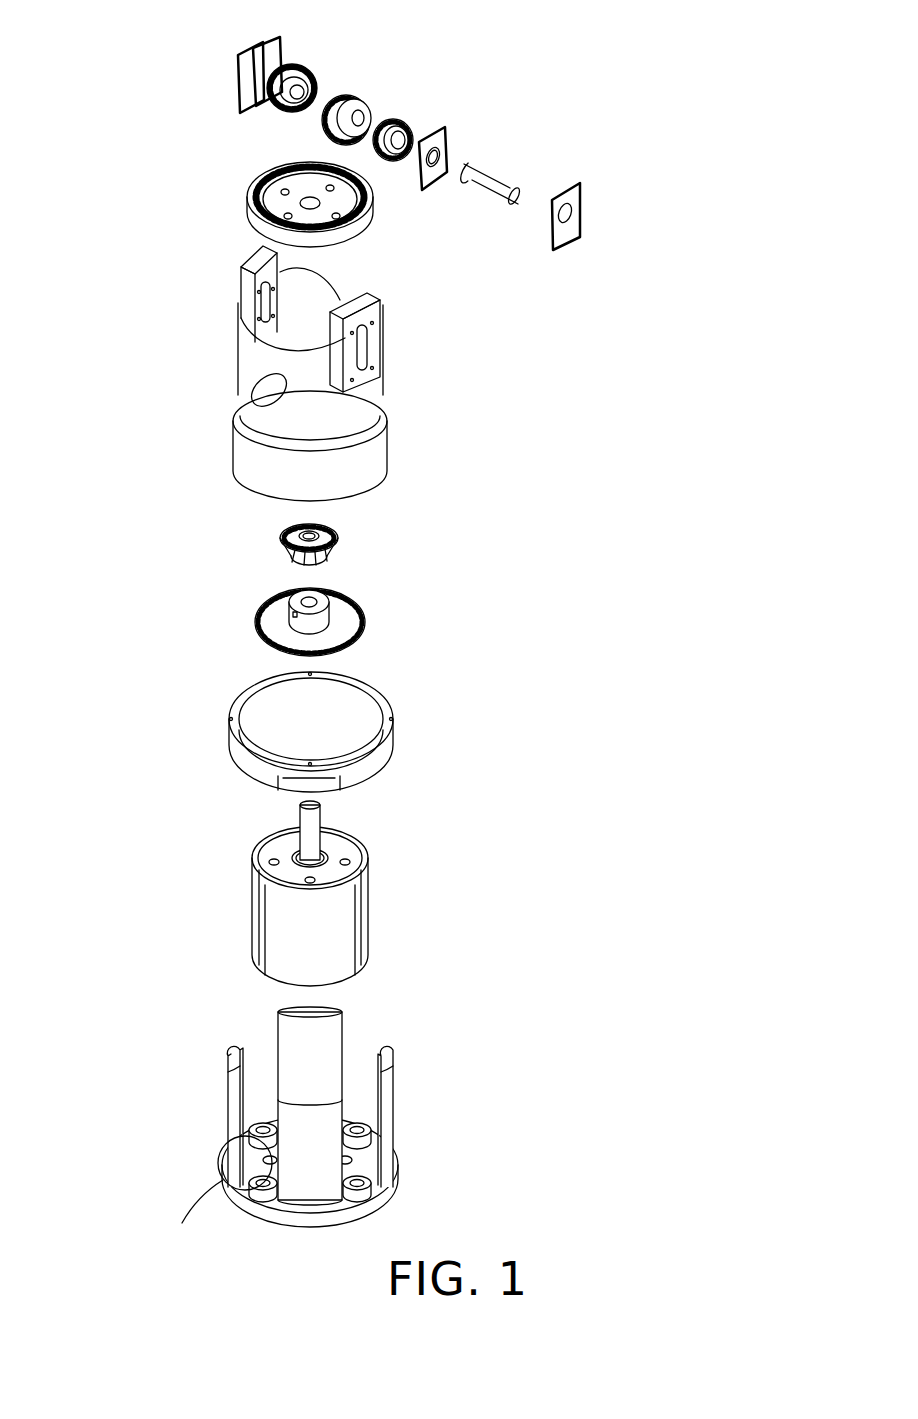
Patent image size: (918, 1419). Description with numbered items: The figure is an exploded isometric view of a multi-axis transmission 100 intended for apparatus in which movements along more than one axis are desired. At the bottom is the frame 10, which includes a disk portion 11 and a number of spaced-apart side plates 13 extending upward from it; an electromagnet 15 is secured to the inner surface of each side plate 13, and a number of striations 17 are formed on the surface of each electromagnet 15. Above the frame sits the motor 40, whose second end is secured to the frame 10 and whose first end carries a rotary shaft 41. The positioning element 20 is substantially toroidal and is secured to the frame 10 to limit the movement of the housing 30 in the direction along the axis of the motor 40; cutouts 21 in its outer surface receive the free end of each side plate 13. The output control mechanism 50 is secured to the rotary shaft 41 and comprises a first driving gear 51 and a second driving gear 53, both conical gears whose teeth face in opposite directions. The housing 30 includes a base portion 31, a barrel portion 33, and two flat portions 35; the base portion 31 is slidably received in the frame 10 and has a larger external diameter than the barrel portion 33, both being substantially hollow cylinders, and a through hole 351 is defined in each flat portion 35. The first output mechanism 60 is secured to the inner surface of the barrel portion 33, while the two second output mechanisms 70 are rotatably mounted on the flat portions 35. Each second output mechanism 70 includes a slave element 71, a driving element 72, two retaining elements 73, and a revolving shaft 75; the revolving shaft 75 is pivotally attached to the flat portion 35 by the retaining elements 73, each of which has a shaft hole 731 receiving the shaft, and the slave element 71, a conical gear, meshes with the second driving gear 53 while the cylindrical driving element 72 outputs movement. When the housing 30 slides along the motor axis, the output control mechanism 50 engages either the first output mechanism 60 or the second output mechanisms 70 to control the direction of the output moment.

The multi-axis transmission 100 is at (140, 70).
The frame 10 is at (348, 1138).
The disk portion 11 is at (393, 1177).
The side plates 13 is at (389, 1097).
The electromagnet 15 is at (245, 1167).
The striations 17 is at (242, 1143).
The positioning element 20 is at (357, 751).
The cutouts 21 is at (325, 782).
The housing 30 is at (377, 373).
The base portion 31 is at (365, 453).
The barrel portion 33 is at (358, 408).
The flat portions 35 is at (357, 319).
The through hole 351 is at (372, 342).
The motor 40 is at (352, 893).
The rotary shaft 41 is at (313, 847).
The output control mechanism 50 is at (394, 590).
The first driving gear 51 is at (345, 622).
The second driving gear 53 is at (342, 534).
The first output mechanism 60 is at (358, 227).
The second output mechanisms 70 is at (285, 67).
The slave element 71 is at (360, 103).
The driving element 72 is at (400, 117).
The retaining elements 73 is at (447, 143).
The shaft hole 731 is at (436, 165).
The revolving shaft 75 is at (497, 180).